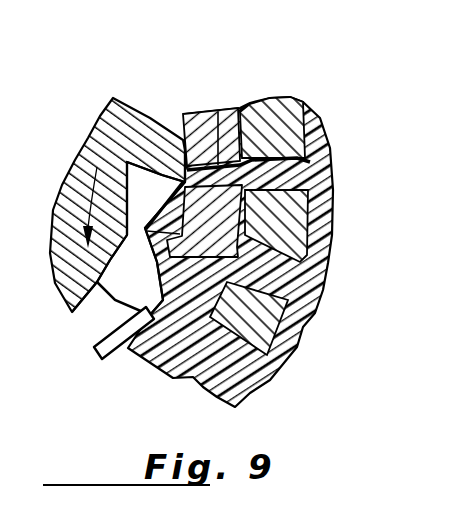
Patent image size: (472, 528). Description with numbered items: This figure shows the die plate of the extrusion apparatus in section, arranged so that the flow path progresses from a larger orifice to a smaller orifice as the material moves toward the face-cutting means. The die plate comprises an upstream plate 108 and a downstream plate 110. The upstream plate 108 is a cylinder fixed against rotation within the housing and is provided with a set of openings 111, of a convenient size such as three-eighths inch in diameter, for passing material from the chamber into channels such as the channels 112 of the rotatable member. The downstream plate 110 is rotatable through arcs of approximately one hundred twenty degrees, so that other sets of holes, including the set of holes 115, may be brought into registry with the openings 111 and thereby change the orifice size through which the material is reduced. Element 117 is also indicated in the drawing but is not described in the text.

The housing block 108 is at (270, 100).
The sealing block 110 is at (193, 120).
The gasket strip 111 is at (286, 157).
The channel 112 is at (145, 252).
The partition plate 115 is at (218, 118).
The locking strip 117 is at (105, 312).